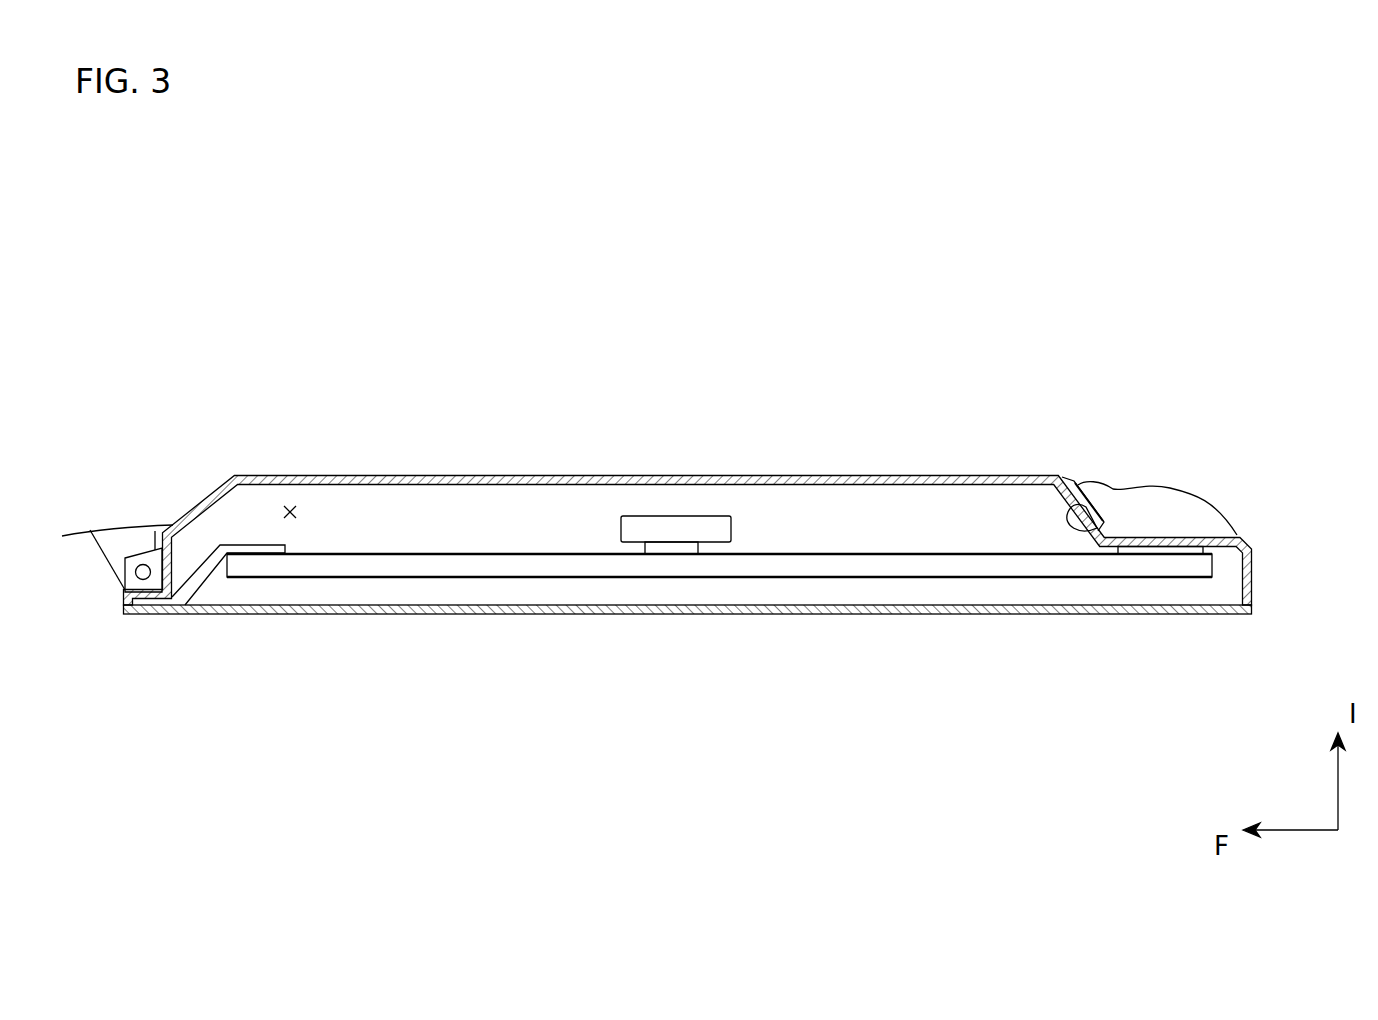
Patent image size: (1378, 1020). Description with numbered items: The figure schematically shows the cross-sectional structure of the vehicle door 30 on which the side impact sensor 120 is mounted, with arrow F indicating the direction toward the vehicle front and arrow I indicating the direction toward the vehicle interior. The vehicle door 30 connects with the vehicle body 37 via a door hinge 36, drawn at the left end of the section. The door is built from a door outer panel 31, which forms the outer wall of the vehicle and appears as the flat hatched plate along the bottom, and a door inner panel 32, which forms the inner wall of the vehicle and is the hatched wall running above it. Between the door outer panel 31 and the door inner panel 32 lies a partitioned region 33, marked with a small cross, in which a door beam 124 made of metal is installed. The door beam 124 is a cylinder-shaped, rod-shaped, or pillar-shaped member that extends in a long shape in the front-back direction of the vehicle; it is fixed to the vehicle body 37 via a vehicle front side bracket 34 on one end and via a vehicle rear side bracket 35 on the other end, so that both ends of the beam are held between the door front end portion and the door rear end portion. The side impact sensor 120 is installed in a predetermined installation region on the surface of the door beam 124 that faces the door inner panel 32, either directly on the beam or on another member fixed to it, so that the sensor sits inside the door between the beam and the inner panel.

The vehicle door 30 is at (688, 521).
The door outer panel 31 is at (203, 615).
The door inner panel 32 is at (282, 475).
The partitioned region 33 is at (297, 514).
The vehicle front side bracket 34 is at (210, 560).
The vehicle rear side bracket 35 is at (1165, 551).
The door hinge 36 is at (125, 548).
The vehicle body 37 is at (1098, 503).
The side impact sensor 120 is at (677, 515).
The door beam 124 is at (897, 553).